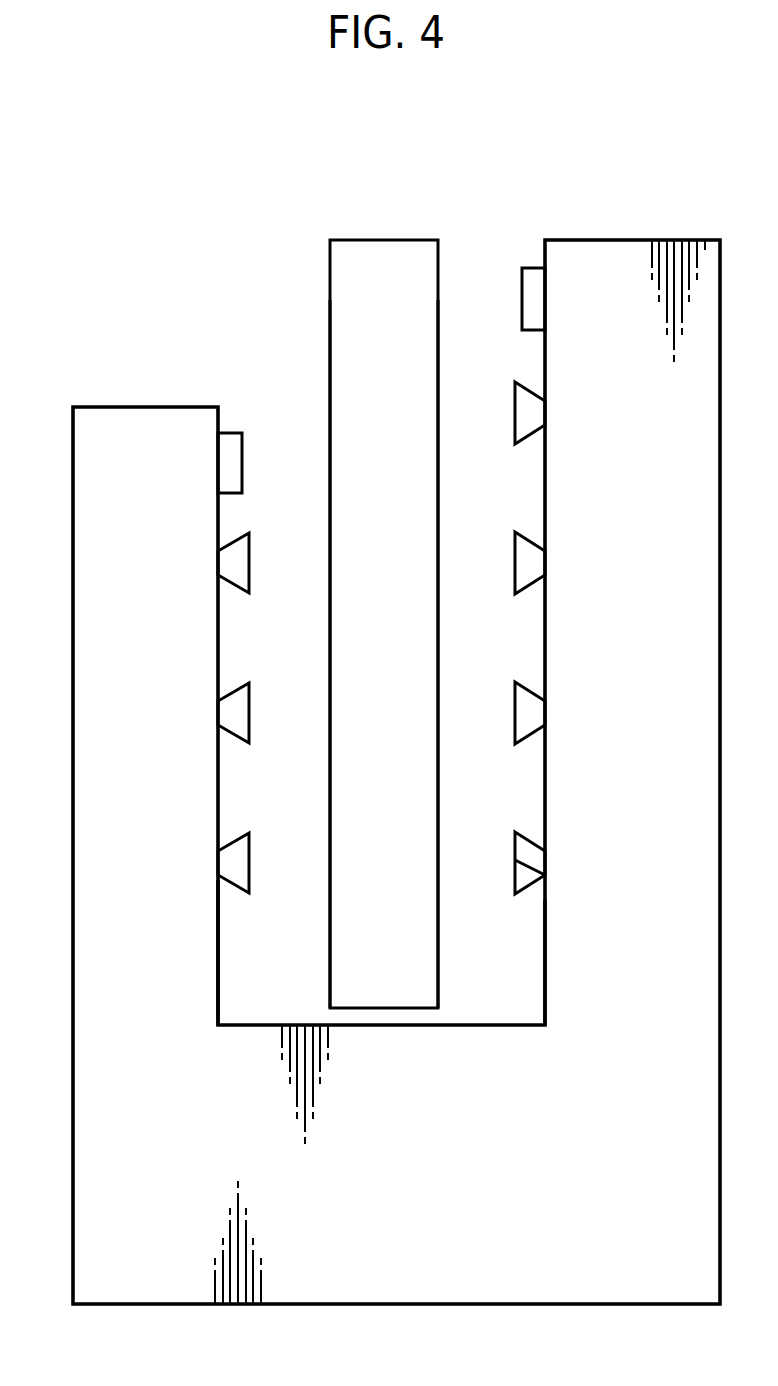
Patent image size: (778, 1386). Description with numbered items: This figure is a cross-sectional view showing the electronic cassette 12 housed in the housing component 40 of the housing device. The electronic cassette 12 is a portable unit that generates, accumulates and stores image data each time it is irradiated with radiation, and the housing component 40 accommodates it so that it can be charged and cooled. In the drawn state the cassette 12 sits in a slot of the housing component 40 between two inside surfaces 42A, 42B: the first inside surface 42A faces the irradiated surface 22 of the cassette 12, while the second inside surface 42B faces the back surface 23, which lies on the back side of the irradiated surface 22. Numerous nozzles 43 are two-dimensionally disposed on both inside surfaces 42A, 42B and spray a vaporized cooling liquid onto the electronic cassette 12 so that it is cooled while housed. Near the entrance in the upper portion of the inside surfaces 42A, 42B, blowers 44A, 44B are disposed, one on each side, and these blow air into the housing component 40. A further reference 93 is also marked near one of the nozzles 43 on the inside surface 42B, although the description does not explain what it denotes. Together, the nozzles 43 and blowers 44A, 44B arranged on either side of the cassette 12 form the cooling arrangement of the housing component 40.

The electronic cassette 12 is at (380, 240).
The irradiated surface 22 is at (330, 343).
The back surface 23 is at (438, 343).
The housing component 40 is at (238, 392).
The inside surface 42A is at (218, 955).
The inside surface 42B is at (545, 972).
The nozzle 43 is at (250, 572).
The blower 44A is at (242, 468).
The blower 44B is at (522, 297).
The nozzle outlet 93 is at (513, 897).